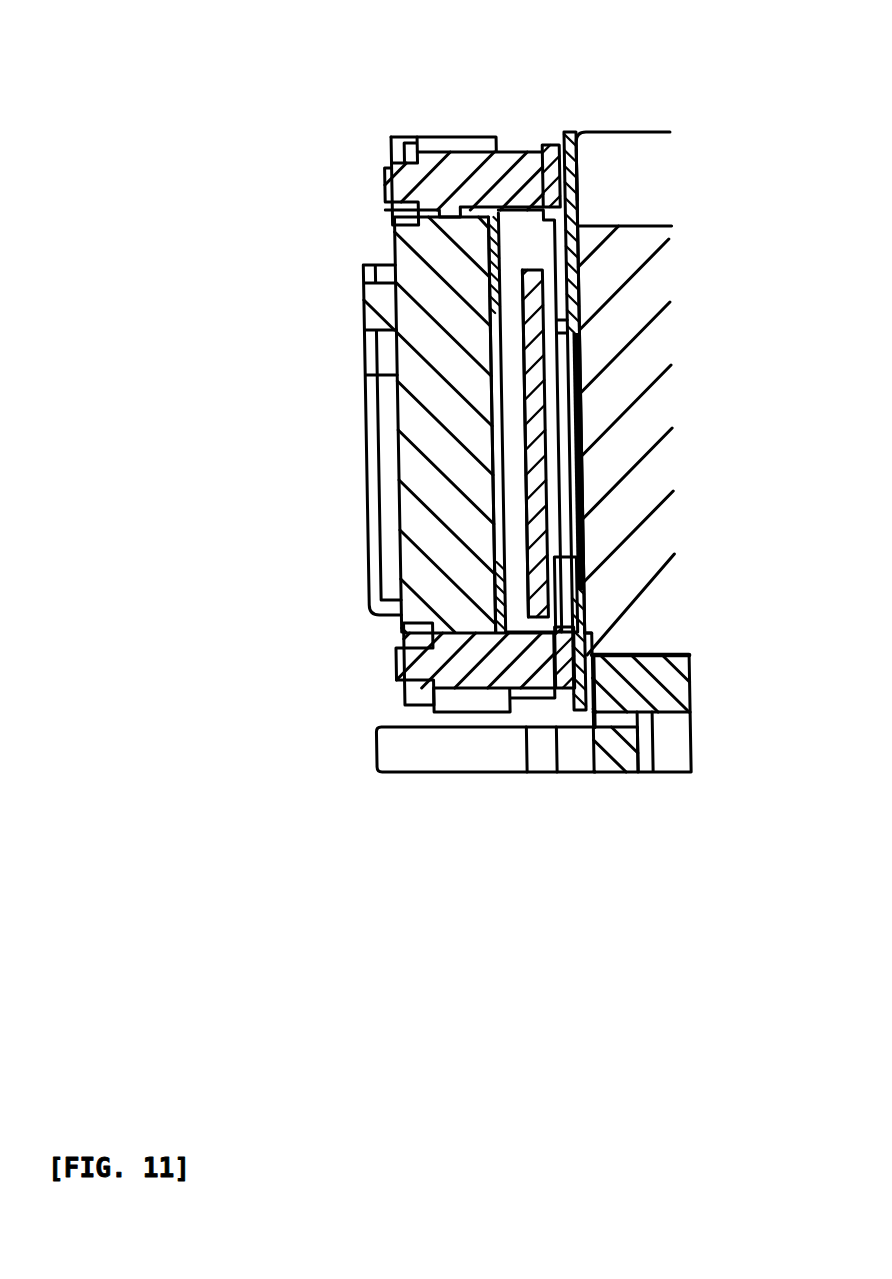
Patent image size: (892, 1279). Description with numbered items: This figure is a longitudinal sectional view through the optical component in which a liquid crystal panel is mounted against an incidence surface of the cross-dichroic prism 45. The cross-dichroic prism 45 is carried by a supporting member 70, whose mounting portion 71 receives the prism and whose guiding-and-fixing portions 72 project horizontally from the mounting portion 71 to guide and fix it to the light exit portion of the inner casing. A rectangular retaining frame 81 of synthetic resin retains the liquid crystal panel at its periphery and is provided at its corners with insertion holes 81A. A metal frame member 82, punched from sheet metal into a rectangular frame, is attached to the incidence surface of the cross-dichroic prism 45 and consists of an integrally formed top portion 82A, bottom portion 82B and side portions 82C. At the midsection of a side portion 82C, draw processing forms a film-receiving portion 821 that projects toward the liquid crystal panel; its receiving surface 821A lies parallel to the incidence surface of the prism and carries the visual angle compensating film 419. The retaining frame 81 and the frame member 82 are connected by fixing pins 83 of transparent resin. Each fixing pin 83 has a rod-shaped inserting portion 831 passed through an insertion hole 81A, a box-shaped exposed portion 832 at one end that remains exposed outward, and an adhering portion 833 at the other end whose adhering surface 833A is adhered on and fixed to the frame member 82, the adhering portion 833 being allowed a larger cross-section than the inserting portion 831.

The cross-dichroic prism 45 is at (652, 303).
The supporting member 70 is at (349, 770).
The mounting portion 71 is at (618, 755).
The guiding-and-fixing portion 72 is at (410, 753).
The retaining frame 81 is at (360, 484).
The insertion hole 81A is at (452, 213).
The frame member 82 is at (565, 129).
The top portion 82A is at (590, 263).
The bottom portion 82B is at (600, 668).
The side portion 82C is at (578, 581).
The fixing pin 83 is at (384, 186).
The inserting portion 831 is at (444, 137).
The exposed portion 832 is at (394, 137).
The adhering portion 833 is at (557, 136).
The adhering surface 833A is at (590, 168).
The film-receiving portion 821 is at (548, 437).
The receiving surface 821A is at (540, 393).
The visual angle compensating film 419 is at (537, 506).